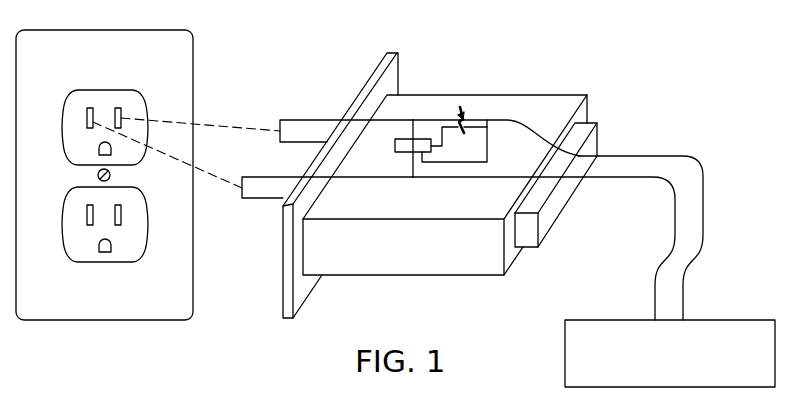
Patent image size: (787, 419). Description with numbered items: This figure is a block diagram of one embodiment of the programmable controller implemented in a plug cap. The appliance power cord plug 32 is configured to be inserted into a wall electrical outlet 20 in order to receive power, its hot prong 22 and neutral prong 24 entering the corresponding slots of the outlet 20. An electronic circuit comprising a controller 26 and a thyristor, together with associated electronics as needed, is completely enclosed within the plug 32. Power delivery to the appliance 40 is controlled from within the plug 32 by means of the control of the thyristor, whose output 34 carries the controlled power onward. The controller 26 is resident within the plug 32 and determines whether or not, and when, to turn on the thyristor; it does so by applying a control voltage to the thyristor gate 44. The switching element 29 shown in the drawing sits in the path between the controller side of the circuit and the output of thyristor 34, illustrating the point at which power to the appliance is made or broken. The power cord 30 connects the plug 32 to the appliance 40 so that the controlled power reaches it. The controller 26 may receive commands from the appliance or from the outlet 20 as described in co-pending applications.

The electrical outlet 20 is at (193, 57).
The hot prong of plug 22 is at (300, 120).
The neutral prong of plug 24 is at (258, 199).
The controller 26 is at (398, 138).
The switch 29 is at (461, 105).
The power cord 30 is at (704, 218).
The plug 32 is at (431, 277).
The output of thyristor 34 is at (489, 117).
The appliance 40 is at (565, 358).
The gate of thyristor 44 is at (442, 127).